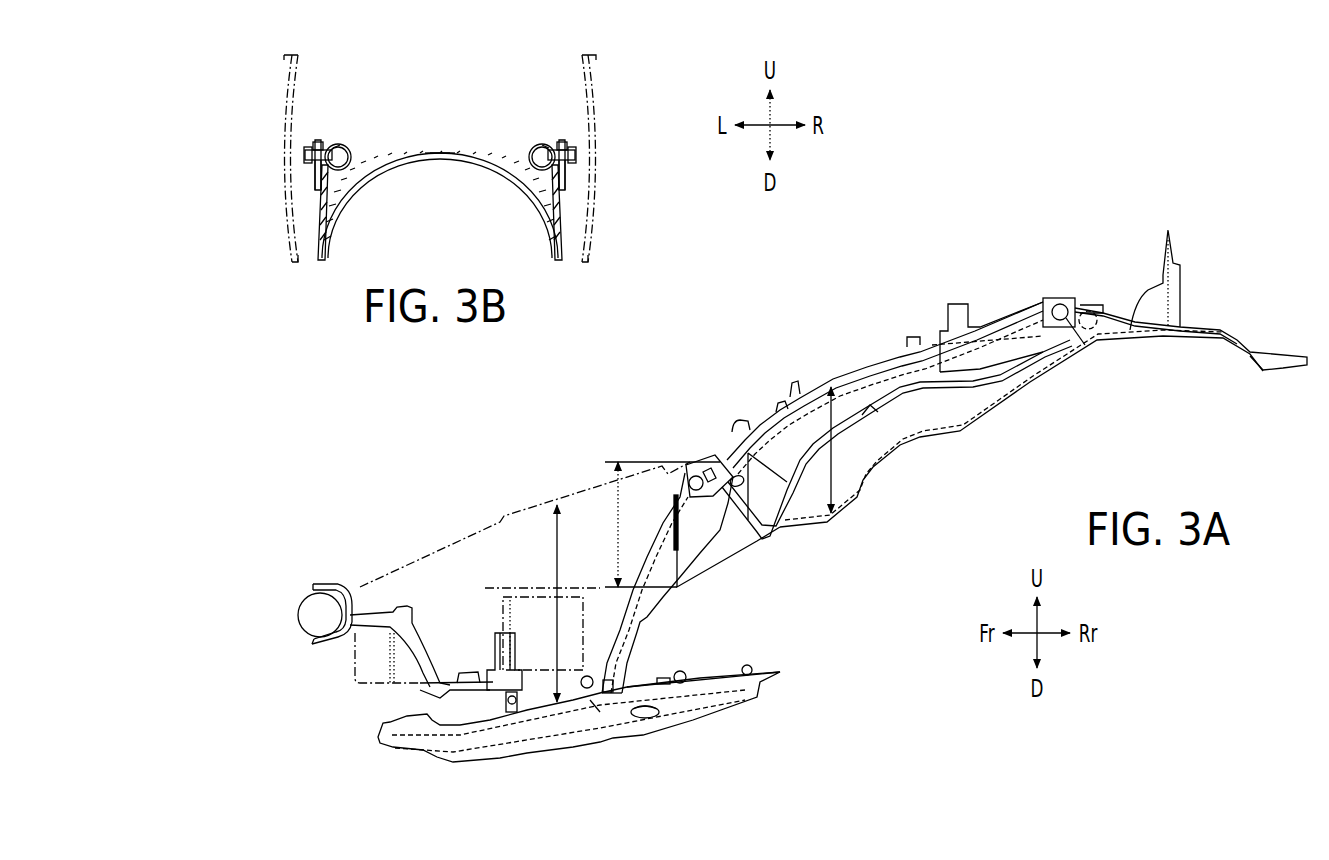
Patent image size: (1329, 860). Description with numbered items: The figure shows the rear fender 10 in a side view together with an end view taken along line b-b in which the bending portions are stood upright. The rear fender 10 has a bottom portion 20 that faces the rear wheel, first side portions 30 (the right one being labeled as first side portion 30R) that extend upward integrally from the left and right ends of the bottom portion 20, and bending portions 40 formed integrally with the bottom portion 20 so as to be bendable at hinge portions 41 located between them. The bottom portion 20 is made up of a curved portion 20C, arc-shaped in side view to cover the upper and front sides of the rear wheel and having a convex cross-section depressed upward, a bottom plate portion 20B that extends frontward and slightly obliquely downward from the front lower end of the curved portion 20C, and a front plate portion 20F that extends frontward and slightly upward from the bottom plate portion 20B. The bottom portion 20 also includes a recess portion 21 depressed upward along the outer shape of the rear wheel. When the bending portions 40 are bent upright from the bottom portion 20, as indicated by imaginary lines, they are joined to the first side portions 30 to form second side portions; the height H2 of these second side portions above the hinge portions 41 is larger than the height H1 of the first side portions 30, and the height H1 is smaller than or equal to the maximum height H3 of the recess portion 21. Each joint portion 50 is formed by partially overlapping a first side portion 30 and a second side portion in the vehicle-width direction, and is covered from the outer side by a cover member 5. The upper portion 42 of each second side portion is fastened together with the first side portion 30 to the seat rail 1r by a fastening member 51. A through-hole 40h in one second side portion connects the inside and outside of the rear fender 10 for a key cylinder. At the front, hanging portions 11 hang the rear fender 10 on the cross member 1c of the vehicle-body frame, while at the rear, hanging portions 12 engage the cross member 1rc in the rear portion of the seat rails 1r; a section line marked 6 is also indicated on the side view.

In FIG. 3A, the cross member 1c is at (302, 606).
In FIG. 3B, the seat rail 1r is at (346, 143).
In FIG. 3A, the cross member 1rc is at (1093, 327).
In FIG. 3B, the cover member 5 is at (283, 85).
In FIG. 3A, the section line 6 is at (585, 417).
In FIG. 3A, the line b- b is at (695, 405).
In FIG. 3A, the rear fender 10 is at (725, 343).
In FIG. 3A, the hanging portions 11 is at (317, 575).
In FIG. 3A, the hanging portions 12 is at (1088, 302).
In FIG. 3B, the bottom portion 20 is at (428, 150).
In FIG. 3A, the bottom portion 20 is at (650, 557).
In FIG. 3A, the bottom plate portion 20B is at (593, 707).
In FIG. 3A, the curved portion 20C is at (817, 383).
In FIG. 3A, the front plate portion 20F is at (348, 693).
In FIG. 3B, the recess portion 21 is at (441, 162).
In FIG. 3B, the first side portion 30 is at (565, 215).
In FIG. 3A, the first side portion 30 is at (713, 537).
In FIG. 3B, the first side portion 30R is at (318, 215).
In FIG. 3B, the bending portion 40 is at (316, 183).
In FIG. 3A, the bending portion 40 is at (437, 560).
In FIG. 3A, the through-hole 40h is at (652, 718).
In FIG. 3A, the hinge portion 41 is at (545, 716).
In FIG. 3B, the upper portion 42 is at (313, 143).
In FIG. 3A, the upper portion 42 is at (782, 683).
In FIG. 3B, the joint portion 50 is at (318, 140).
In FIG. 3A, the joint portion 50 is at (683, 485).
In FIG. 3B, the fastening member 51 is at (305, 157).
In FIG. 3A, the height of first side portions H1 is at (654, 524).
In FIG. 3A, the height of second side portions H2 is at (542, 603).
In FIG. 3A, the maximum height of recess portion H3 is at (816, 450).